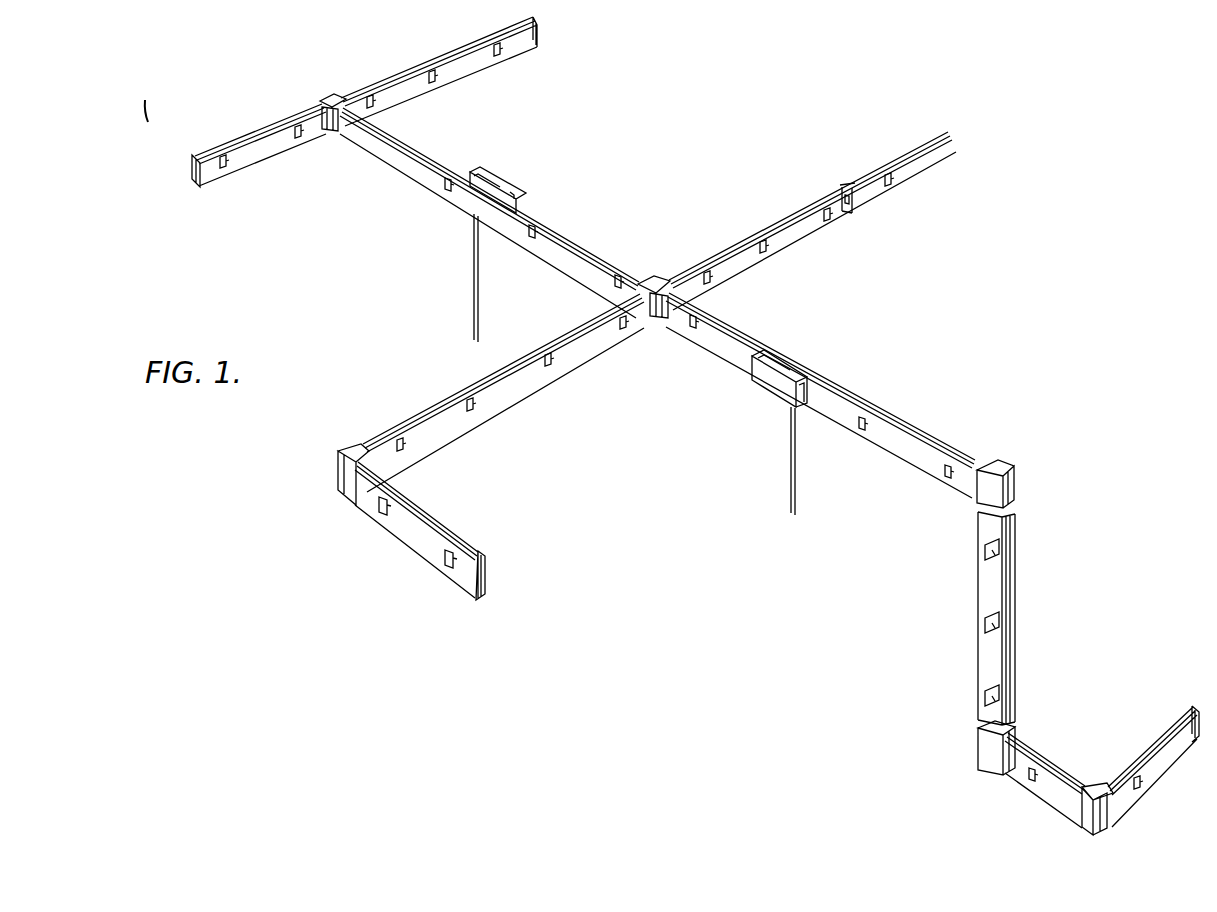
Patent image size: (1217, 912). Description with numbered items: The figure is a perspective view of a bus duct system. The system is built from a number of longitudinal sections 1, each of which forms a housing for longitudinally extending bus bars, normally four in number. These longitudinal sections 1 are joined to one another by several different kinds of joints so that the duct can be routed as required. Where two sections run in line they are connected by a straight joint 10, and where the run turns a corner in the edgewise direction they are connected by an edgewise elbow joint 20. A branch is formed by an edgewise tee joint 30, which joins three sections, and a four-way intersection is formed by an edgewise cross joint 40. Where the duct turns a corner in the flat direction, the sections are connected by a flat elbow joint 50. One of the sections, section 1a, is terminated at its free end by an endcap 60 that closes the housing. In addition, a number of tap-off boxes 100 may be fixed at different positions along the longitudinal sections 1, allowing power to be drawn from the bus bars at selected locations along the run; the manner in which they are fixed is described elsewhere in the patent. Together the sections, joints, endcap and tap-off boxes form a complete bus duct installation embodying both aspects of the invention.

The longitudinal section 1 is at (770, 258).
The section 1a is at (415, 552).
The straight joint 10 is at (850, 205).
The edgewise elbow joint 20 is at (340, 464).
The edgewise tee joint 30 is at (330, 100).
The edgewise cross joint 40 is at (652, 282).
The flat elbow joint 50 is at (1008, 477).
The endcap 60 is at (482, 580).
The tap-off box 100 is at (527, 157).